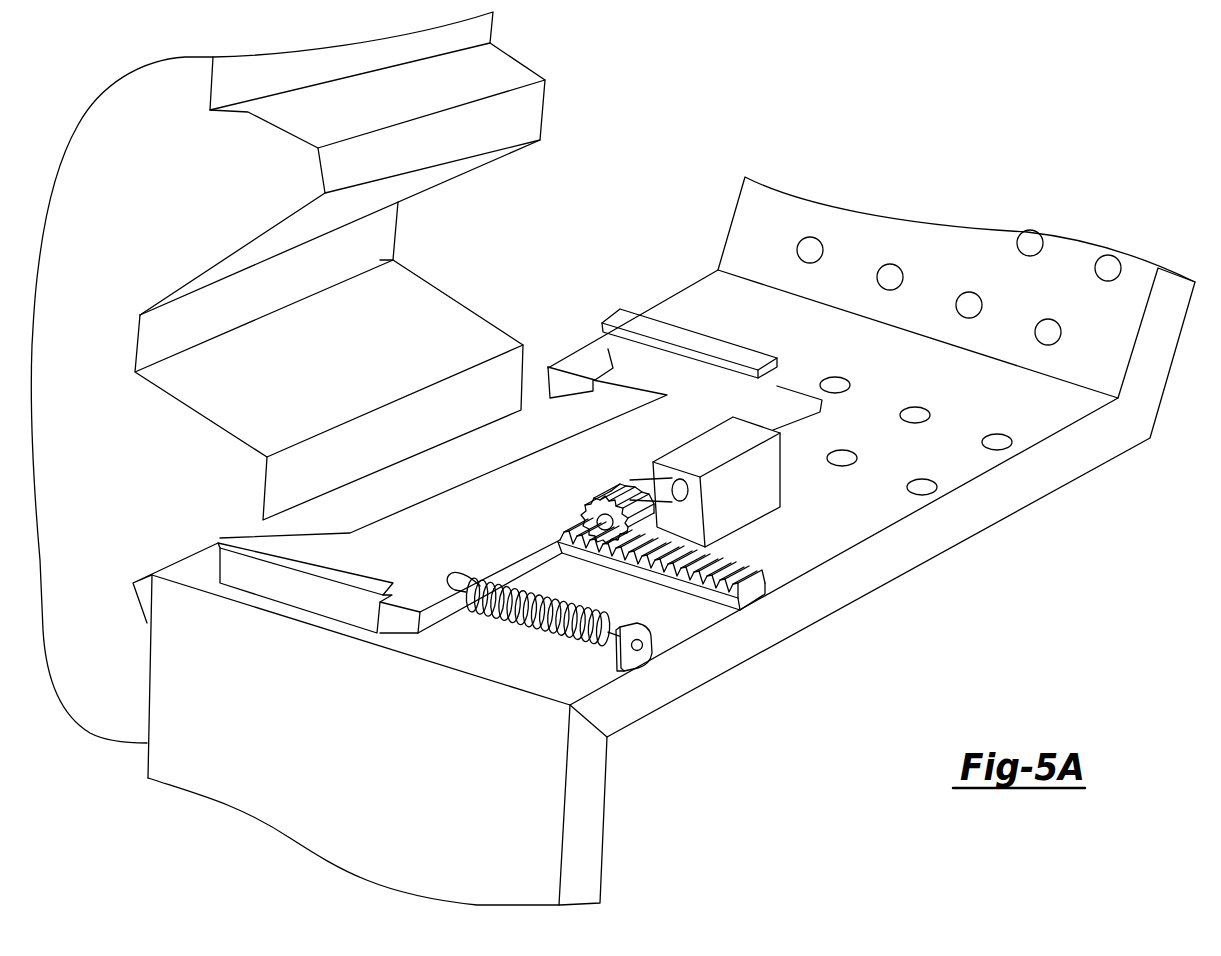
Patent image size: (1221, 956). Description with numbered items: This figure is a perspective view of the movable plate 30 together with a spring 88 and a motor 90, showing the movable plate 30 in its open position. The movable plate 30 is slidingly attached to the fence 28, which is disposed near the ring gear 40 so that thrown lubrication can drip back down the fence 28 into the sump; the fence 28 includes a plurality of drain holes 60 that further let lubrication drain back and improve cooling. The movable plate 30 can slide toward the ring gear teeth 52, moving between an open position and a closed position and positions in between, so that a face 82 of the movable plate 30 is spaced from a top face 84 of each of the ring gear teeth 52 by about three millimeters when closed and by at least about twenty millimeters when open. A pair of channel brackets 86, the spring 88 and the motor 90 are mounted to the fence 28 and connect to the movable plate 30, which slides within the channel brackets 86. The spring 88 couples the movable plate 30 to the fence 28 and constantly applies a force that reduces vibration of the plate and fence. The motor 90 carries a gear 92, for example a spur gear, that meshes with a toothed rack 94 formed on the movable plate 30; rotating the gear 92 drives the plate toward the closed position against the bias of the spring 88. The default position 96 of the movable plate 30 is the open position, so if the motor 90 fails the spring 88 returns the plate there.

The fence 28 is at (993, 274).
The movable plate 30 is at (499, 538).
The ring gear 40 is at (165, 227).
The ring gear teeth 52 is at (407, 188).
The drain holes 60 is at (877, 270).
The face 82 is at (543, 449).
The top face 84 is at (483, 145).
The channel brackets 86 is at (657, 327).
The spring 88 is at (500, 617).
The motor 90 is at (756, 500).
The gear 92 is at (620, 490).
The toothed rack 94 is at (730, 558).
The default position 96 is at (565, 276).